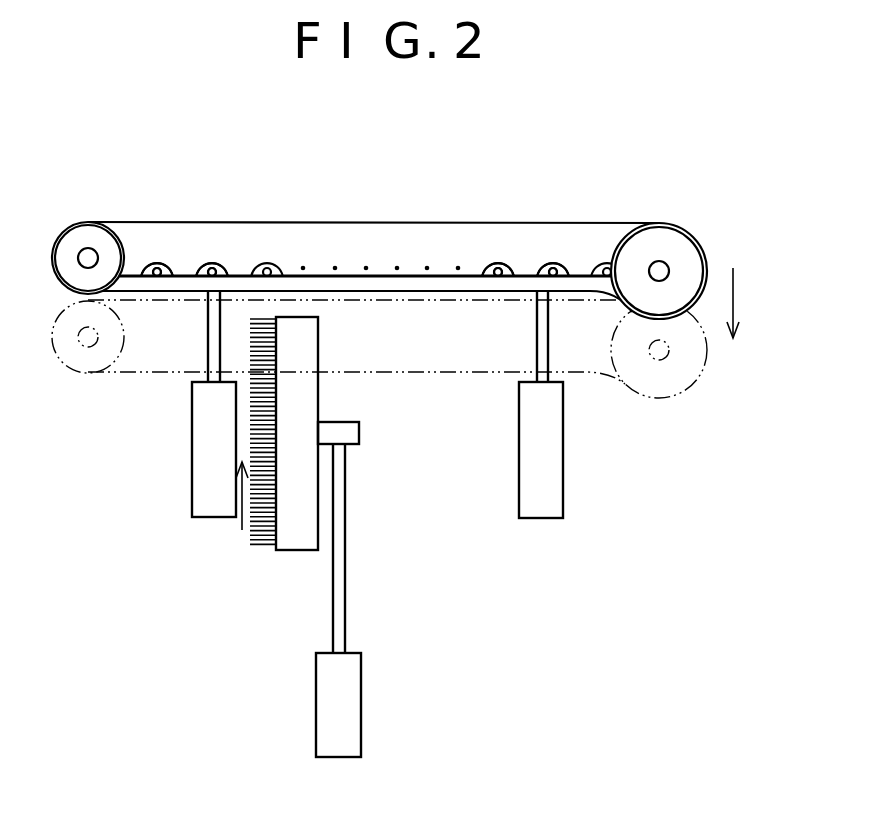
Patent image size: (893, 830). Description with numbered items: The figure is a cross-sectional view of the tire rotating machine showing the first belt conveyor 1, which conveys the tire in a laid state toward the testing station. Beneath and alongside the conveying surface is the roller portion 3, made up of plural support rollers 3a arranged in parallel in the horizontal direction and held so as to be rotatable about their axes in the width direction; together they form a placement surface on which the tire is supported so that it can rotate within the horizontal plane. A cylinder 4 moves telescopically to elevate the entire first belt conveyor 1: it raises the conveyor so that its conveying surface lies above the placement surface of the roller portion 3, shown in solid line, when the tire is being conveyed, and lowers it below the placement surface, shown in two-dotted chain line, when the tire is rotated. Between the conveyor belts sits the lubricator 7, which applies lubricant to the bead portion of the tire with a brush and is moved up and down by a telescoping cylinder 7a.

The first belt conveyor 1 is at (379, 270).
The roller portion 3 is at (271, 250).
The support rollers 3a is at (212, 257).
The cylinder 4 is at (200, 438).
The lubricator 7 is at (218, 535).
The cylinder 7a is at (350, 708).